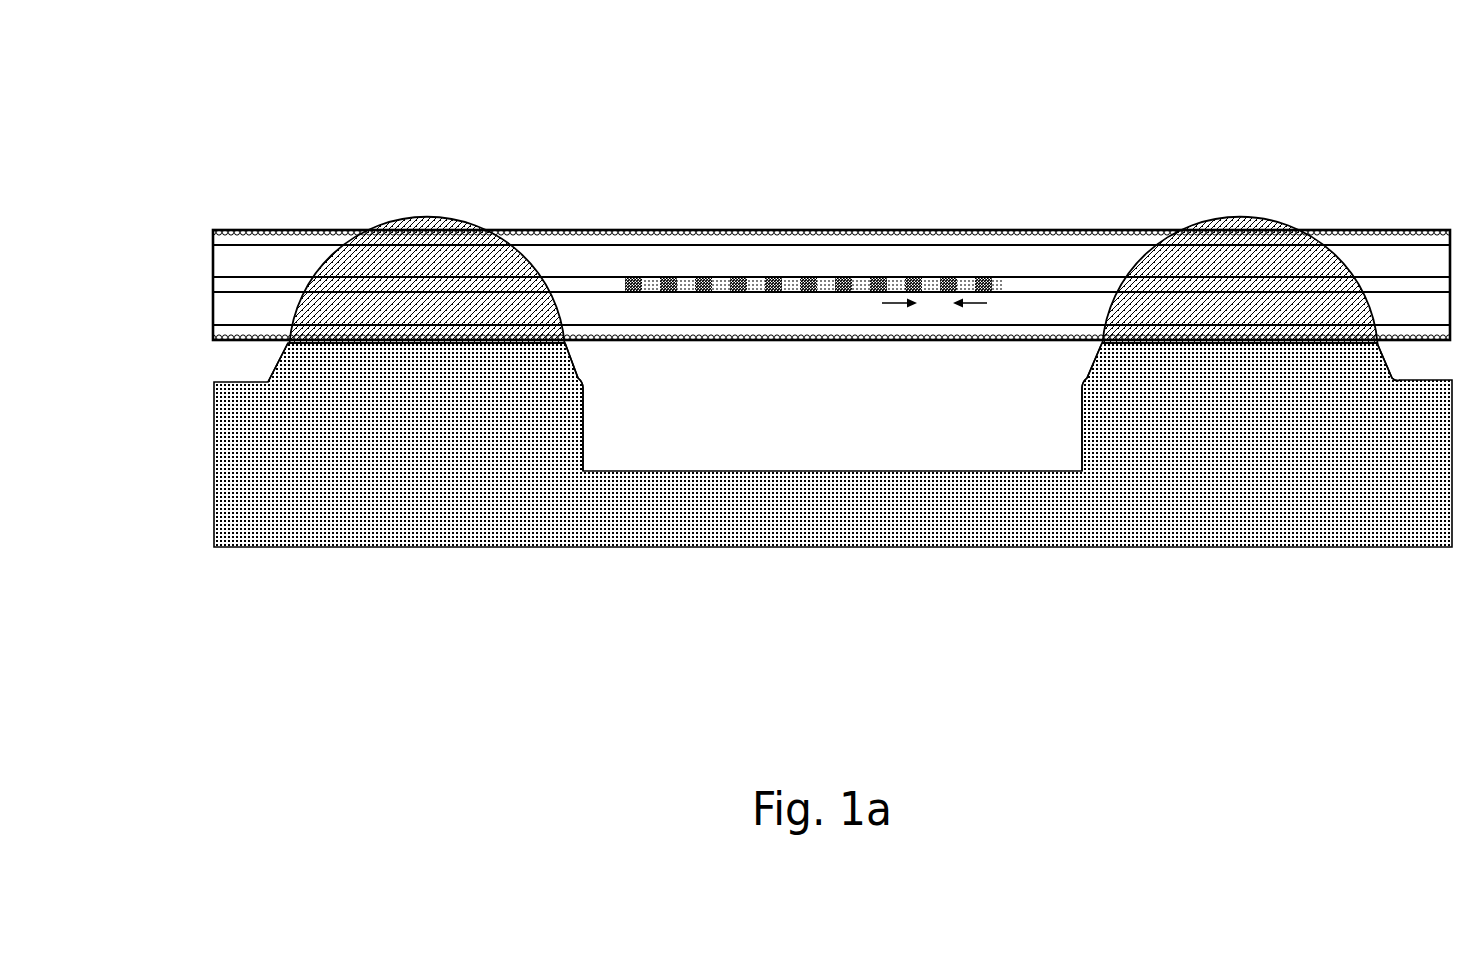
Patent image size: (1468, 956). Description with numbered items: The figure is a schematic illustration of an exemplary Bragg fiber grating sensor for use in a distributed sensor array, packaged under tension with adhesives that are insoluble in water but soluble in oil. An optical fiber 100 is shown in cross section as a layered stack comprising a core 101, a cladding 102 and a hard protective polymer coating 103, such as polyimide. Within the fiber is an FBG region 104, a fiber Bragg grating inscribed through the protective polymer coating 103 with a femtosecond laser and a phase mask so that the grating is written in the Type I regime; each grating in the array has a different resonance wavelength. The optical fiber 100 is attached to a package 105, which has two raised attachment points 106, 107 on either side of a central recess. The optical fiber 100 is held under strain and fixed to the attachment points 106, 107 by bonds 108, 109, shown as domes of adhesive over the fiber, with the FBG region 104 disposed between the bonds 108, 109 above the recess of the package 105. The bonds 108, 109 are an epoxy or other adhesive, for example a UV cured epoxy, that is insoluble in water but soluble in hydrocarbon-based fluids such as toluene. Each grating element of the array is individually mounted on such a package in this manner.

The optical fiber 100 is at (213, 325).
The core 101 is at (233, 287).
The cladding 102 is at (288, 265).
The protective polymer coating 103 is at (597, 230).
The FBG region 104 is at (810, 275).
The package 105 is at (843, 515).
The attachment point 106 is at (463, 377).
The attachment point 107 is at (1208, 368).
The bond 108 is at (1228, 215).
The bond 109 is at (422, 215).